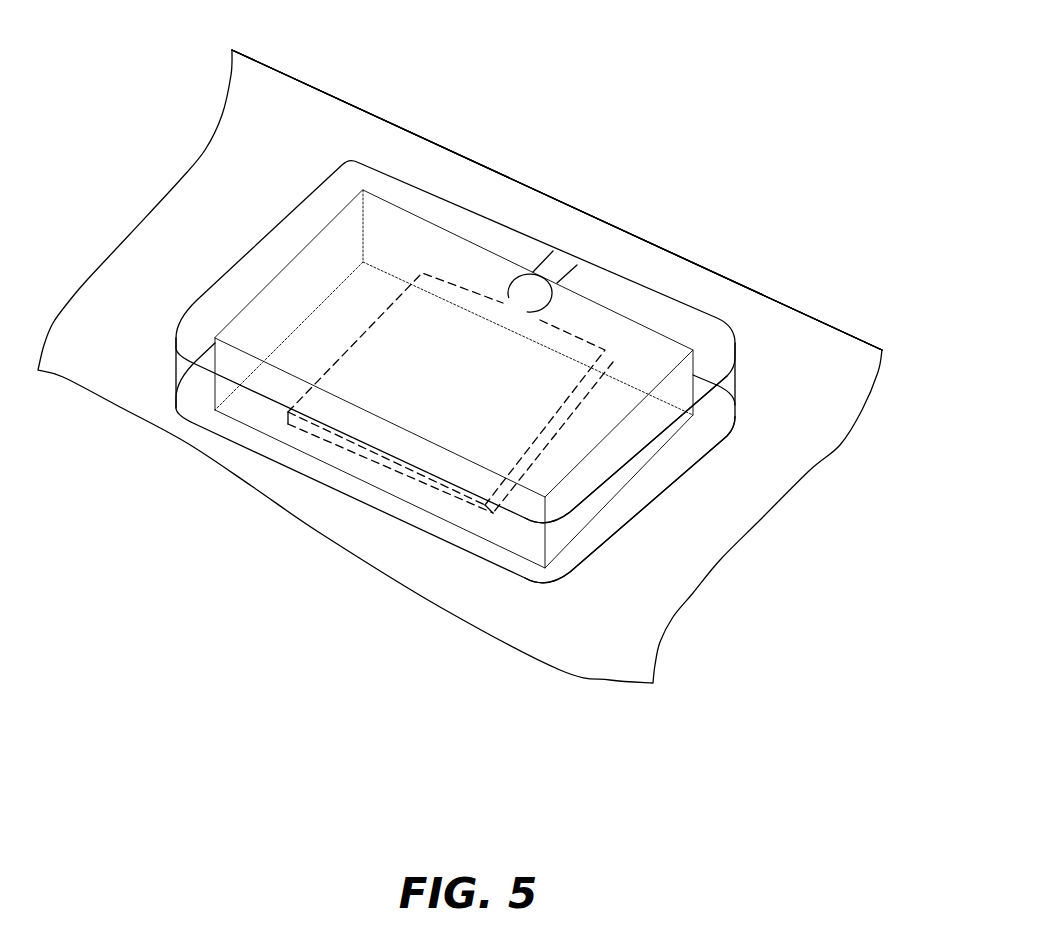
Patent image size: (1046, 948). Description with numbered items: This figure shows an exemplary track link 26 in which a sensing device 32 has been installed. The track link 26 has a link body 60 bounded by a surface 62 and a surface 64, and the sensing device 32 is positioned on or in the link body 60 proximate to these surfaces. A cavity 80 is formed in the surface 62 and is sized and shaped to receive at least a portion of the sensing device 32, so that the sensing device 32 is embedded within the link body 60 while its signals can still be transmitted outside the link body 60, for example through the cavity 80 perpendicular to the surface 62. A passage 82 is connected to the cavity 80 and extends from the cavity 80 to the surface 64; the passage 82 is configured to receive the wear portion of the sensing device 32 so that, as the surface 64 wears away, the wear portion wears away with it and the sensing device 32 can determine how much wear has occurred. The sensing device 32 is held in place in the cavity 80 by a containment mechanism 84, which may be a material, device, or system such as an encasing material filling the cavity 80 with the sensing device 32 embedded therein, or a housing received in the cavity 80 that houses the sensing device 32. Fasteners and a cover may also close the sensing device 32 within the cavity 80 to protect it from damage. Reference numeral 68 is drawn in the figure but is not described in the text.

The track link 26 is at (283, 82).
The link body 60 is at (180, 187).
The surface 62 is at (245, 171).
The surface 64 is at (473, 163).
The cavity 80 is at (233, 273).
The passage 82 is at (507, 290).
The fastener 68 is at (522, 285).
The sensing device 32 is at (436, 401).
The containment mechanism 84 is at (625, 450).